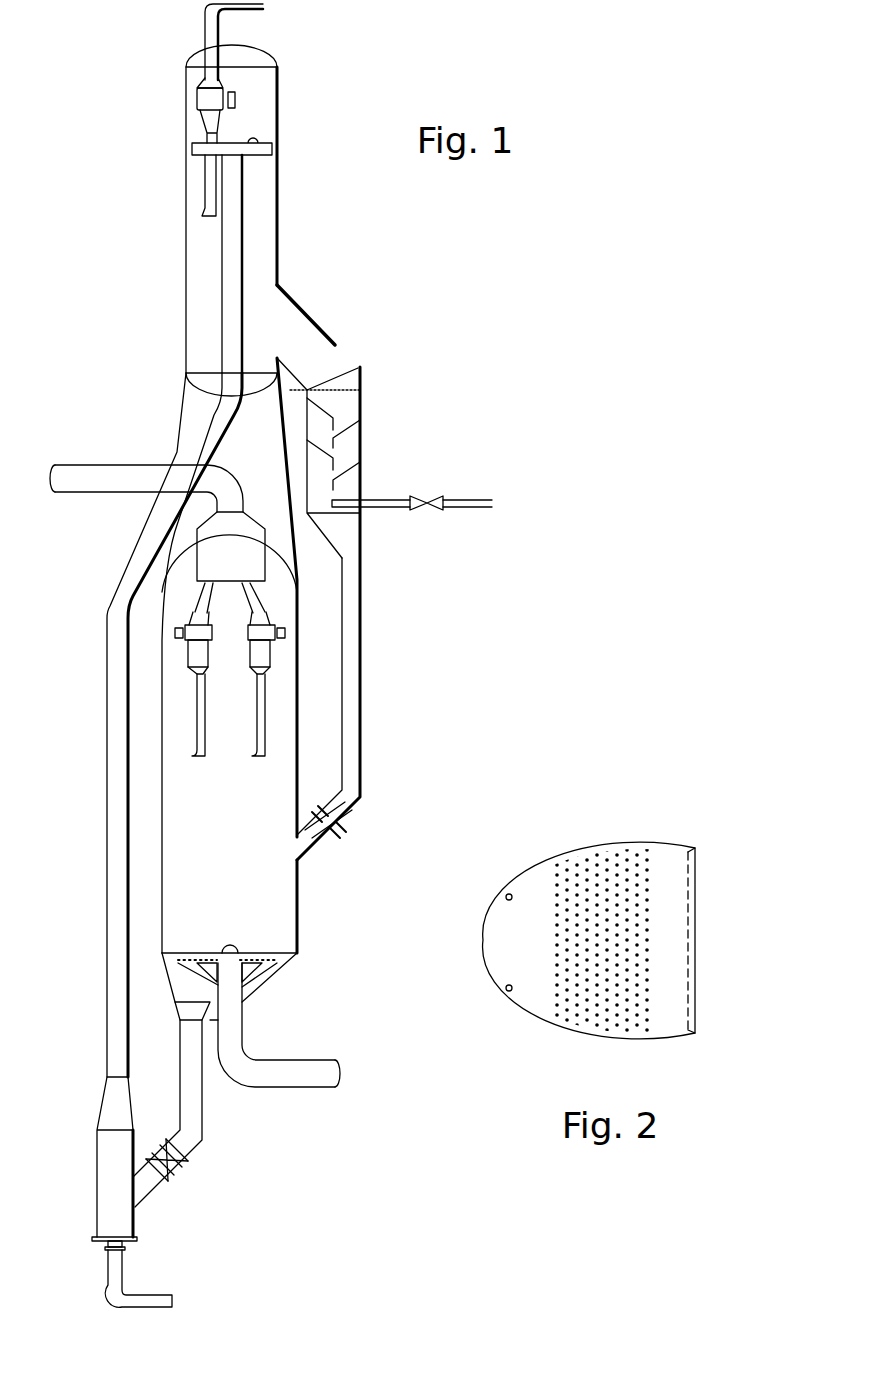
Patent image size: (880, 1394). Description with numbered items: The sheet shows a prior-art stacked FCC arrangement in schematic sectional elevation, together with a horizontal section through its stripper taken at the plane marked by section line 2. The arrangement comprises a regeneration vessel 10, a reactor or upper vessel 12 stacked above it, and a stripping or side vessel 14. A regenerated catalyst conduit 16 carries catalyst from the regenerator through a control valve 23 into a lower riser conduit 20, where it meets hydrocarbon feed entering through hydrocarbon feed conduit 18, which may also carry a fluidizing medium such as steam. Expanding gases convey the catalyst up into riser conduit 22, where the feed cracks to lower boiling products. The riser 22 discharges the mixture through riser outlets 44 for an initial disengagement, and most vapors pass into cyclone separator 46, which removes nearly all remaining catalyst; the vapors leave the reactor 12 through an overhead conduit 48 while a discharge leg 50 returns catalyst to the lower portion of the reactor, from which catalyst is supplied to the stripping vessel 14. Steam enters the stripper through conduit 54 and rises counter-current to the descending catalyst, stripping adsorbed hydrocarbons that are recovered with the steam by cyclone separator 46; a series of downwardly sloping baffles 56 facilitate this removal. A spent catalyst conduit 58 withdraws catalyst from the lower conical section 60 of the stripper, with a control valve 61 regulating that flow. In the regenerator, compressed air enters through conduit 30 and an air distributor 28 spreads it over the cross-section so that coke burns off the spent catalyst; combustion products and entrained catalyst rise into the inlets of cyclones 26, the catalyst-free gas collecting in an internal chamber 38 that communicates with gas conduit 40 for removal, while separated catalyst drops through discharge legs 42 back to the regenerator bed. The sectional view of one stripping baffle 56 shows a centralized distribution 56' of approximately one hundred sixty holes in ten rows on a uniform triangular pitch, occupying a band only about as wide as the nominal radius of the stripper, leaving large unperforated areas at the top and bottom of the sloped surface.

In FIG. 1, the section line 2- 2 is at (344, 400).
In FIG. 1, the regeneration vessel 10 is at (216, 838).
In FIG. 1, the reactor or upper vessel 12 is at (262, 214).
In FIG. 1, the stripping or side vessel 14 is at (335, 347).
In FIG. 1, the regenerated catalyst conduit 16 is at (204, 1112).
In FIG. 1, the hydrocarbon feed conduit 18 is at (150, 1294).
In FIG. 1, the lower riser conduit 20 is at (97, 1193).
In FIG. 1, the riser conduit 22 is at (107, 665).
In FIG. 1, the control valve 23 is at (185, 1173).
In FIG. 1, the cyclones 26 is at (206, 668).
In FIG. 1, the air distributor 28 is at (203, 955).
In FIG. 1, the conduit 30 is at (290, 1060).
In FIG. 1, the internal chamber 38 is at (216, 564).
In FIG. 1, the gas conduit 40 is at (143, 460).
In FIG. 1, the discharge legs 42 is at (255, 756).
In FIG. 1, the riser outlets 44 is at (257, 160).
In FIG. 1, the cyclone separator 46 is at (202, 82).
In FIG. 1, the overhead conduit 48 is at (262, 6).
In FIG. 1, the discharge leg 50 is at (207, 177).
In FIG. 1, the conduit 54 is at (391, 500).
In FIG. 1, the baffles 56 is at (361, 444).
In FIG. 2, the baffles 56 is at (589, 966).
In FIG. 2, the centralized distribution of holes 56' is at (606, 917).
In FIG. 1, the spent catalyst conduit 58 is at (360, 612).
In FIG. 1, the lower conical section 60 is at (360, 537).
In FIG. 1, the control valve 61 is at (347, 823).